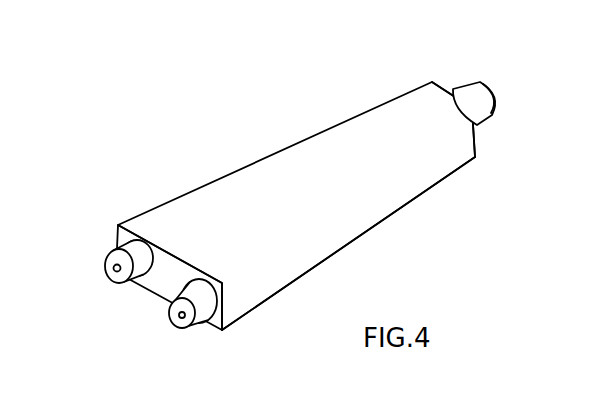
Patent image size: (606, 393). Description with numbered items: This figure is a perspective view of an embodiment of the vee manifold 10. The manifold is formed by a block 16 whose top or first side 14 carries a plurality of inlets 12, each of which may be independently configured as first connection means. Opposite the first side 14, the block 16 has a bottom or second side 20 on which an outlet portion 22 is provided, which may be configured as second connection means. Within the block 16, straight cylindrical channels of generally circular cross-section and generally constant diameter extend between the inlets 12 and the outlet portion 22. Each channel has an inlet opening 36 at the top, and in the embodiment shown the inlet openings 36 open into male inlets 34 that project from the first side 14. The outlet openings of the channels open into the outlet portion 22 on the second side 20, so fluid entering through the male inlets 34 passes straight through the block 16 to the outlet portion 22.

The vee manifold 10 is at (438, 231).
The inlets 12 is at (110, 255).
The first side 14 is at (163, 278).
The block 16 is at (310, 268).
The second side 20 is at (478, 137).
The outlet portion 22 is at (465, 82).
The male inlets 34 is at (197, 323).
The inlet opening 36 is at (112, 282).